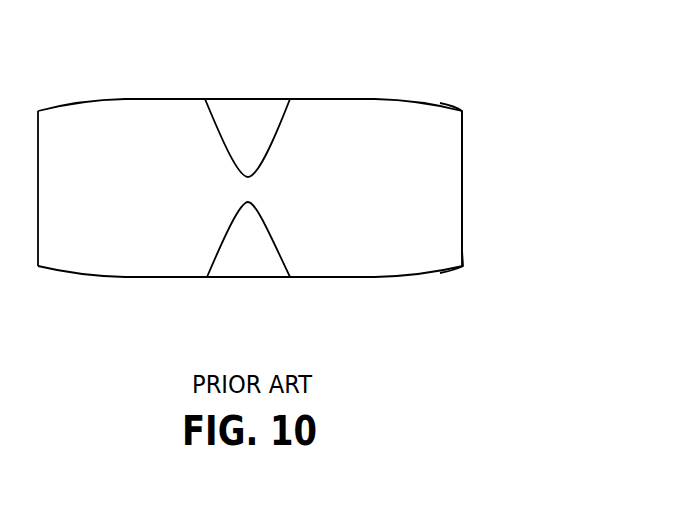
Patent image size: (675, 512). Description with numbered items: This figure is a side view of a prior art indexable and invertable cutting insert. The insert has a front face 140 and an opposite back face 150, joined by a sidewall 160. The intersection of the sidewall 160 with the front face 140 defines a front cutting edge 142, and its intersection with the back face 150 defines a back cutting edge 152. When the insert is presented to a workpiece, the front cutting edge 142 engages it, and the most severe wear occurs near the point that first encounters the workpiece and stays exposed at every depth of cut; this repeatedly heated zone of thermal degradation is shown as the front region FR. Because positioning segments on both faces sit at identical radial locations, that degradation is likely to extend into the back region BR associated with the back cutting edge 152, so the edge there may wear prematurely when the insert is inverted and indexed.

The front region FR is at (248, 110).
The back region BR is at (247, 255).
The front face 140 is at (441, 103).
The front cutting edge 142 is at (462, 111).
The sidewall 160 is at (465, 191).
The back cutting edge 152 is at (463, 266).
The back face 150 is at (437, 272).